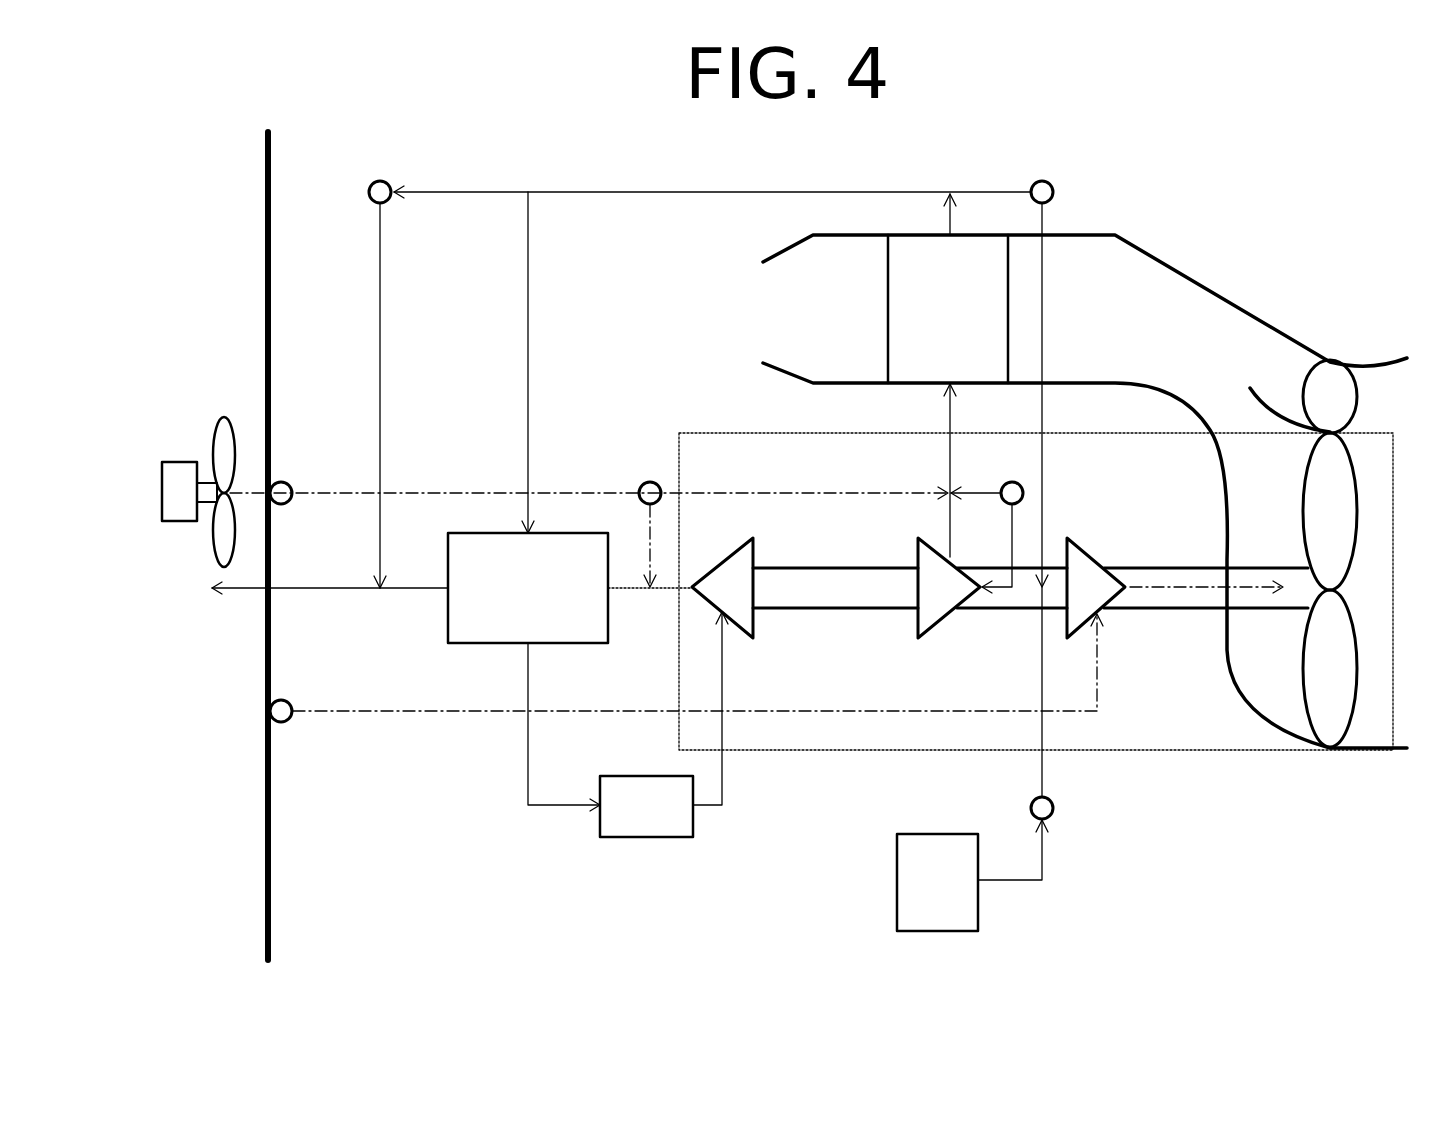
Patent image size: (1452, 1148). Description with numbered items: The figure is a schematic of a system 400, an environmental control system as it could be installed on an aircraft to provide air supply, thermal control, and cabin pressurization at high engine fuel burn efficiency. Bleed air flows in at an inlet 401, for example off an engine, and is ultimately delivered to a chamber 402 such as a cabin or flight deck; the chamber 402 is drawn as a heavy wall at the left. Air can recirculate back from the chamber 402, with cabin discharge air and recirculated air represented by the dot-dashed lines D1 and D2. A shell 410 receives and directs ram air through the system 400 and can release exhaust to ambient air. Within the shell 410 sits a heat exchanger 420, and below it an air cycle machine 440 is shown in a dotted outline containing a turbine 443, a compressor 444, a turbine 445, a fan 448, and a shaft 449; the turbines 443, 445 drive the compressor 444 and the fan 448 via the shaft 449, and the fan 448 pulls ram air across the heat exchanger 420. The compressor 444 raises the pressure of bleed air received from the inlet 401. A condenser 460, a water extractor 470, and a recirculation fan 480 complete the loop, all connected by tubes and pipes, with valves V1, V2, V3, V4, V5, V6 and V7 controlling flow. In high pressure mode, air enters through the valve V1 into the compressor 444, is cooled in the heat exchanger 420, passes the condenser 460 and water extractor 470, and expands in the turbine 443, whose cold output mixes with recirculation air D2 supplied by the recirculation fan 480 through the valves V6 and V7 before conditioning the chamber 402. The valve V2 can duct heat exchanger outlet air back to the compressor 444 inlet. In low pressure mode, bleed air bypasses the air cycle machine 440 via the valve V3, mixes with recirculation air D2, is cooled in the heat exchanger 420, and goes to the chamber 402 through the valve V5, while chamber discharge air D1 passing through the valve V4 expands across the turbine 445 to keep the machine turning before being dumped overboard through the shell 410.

The system 400 is at (1276, 170).
The inlet 401 is at (917, 911).
The chamber 402 is at (267, 132).
The shell 410 is at (1177, 272).
The heat exchanger 420 is at (928, 324).
The air cycle machine 440 is at (1210, 752).
The turbine 443 is at (747, 602).
The compressor 444 is at (963, 602).
The turbine 445 is at (1070, 602).
The fan 448 is at (1278, 652).
The shaft 449 is at (1165, 609).
The condenser 460 is at (508, 601).
The water extractor 470 is at (627, 819).
The recirculation fan 480 is at (183, 548).
The valve V1 is at (1052, 813).
The valve V2 is at (1055, 183).
The valve V3 is at (1008, 482).
The valve V4 is at (290, 720).
The valve V5 is at (393, 180).
The valve V6 is at (290, 503).
The valve V7 is at (658, 502).
The chamber discharge air D1 is at (413, 710).
The recirculation air D2 is at (475, 490).